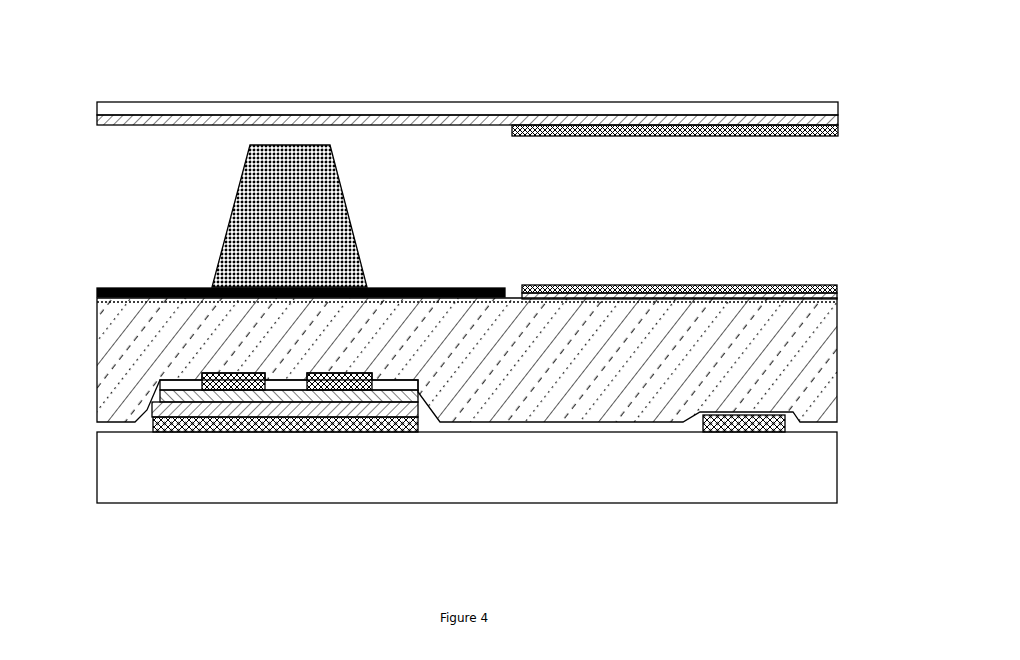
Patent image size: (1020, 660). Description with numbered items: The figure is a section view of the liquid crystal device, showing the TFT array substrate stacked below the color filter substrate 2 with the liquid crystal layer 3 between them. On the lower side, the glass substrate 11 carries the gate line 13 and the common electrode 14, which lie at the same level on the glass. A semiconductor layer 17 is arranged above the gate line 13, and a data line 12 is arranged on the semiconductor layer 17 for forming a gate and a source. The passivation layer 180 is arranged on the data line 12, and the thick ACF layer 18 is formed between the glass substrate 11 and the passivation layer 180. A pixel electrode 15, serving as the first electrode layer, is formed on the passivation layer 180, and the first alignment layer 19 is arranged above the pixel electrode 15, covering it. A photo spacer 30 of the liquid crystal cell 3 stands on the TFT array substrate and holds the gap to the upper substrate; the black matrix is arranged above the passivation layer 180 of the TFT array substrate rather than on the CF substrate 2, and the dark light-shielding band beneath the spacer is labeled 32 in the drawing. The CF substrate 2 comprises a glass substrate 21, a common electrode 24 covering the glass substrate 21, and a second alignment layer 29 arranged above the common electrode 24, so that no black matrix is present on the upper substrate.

The color filter substrate 2 is at (489, 96).
The liquid crystal layer 3 is at (464, 356).
The glass substrate 11 is at (698, 445).
The data line 12 is at (220, 385).
The gate line 13 is at (330, 403).
The common electrode 14 is at (750, 432).
The pixel electrode 15 is at (837, 284).
The semiconductor layer 17 is at (268, 392).
The ACF layer 18 is at (828, 338).
The passivation layer 180 is at (837, 298).
The first alignment layer 19 is at (747, 285).
The glass substrate 21 is at (780, 103).
The common electrode 24 is at (838, 118).
The second alignment layer 29 is at (822, 135).
The photo spacer 30 is at (275, 235).
The light shielding layer 32 is at (115, 288).